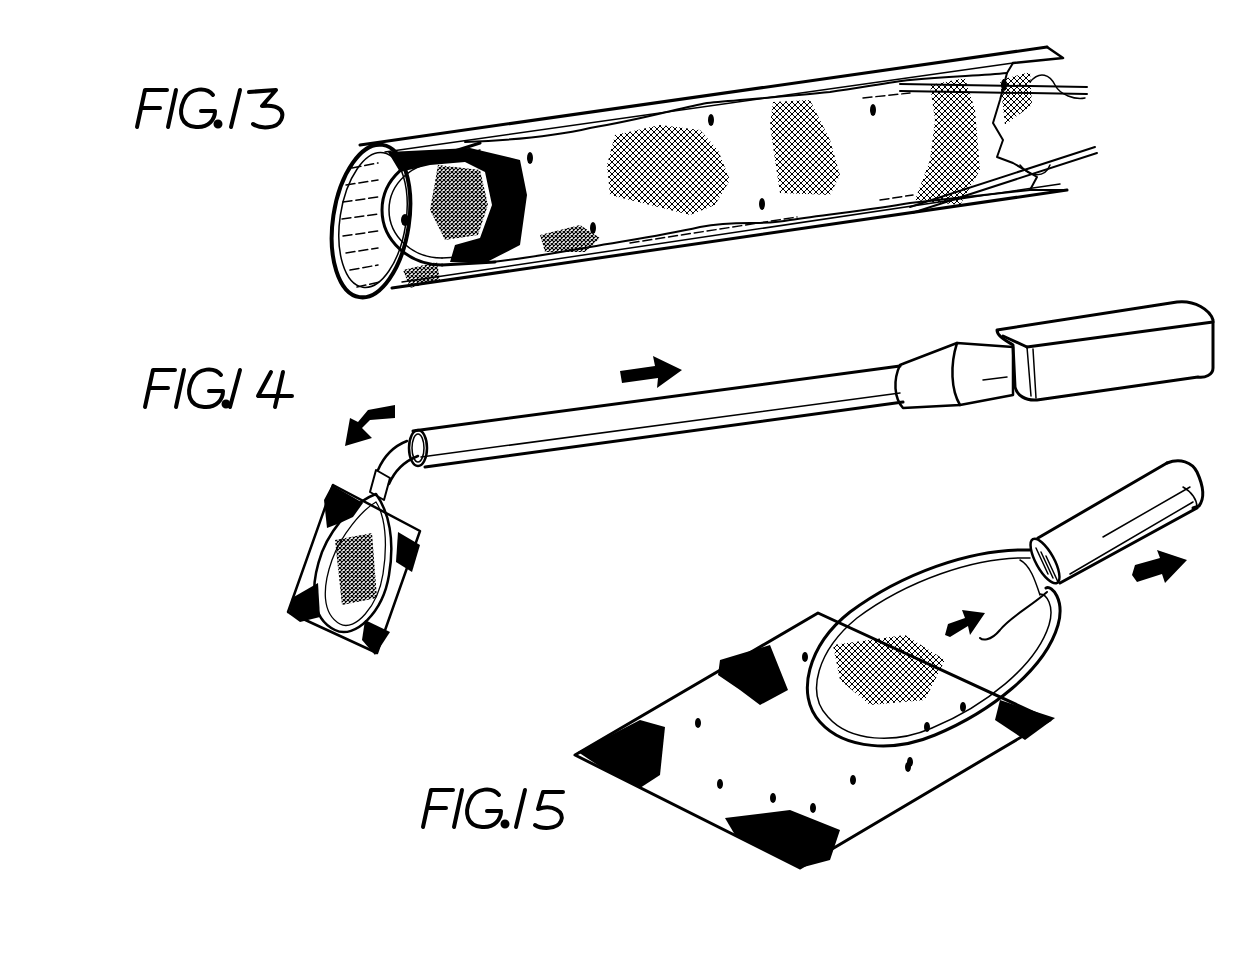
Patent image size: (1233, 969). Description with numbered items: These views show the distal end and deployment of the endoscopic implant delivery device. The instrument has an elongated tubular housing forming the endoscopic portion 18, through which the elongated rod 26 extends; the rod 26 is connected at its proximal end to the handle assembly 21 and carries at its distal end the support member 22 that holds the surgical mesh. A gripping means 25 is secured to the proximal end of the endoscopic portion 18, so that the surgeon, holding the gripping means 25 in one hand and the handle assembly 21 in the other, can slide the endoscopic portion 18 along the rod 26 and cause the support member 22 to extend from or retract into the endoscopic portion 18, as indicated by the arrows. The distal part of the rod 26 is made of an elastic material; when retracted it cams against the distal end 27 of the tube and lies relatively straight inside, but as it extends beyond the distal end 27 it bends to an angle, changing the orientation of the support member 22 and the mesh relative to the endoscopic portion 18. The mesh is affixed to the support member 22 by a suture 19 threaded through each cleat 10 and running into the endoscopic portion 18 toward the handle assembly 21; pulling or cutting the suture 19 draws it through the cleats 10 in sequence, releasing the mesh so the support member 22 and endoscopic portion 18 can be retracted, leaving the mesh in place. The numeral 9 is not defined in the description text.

In FIG. 13, the sample sheet 9 is at (690, 238).
In FIG. 14, the sample sheet 9 is at (307, 572).
In FIG. 15, the sample sheet 9 is at (633, 722).
In FIG. 13, the cleat 10 is at (432, 270).
In FIG. 15, the cleat 10 is at (694, 712).
In FIG. 13, the endoscopic portion 18 is at (412, 148).
In FIG. 14, the endoscopic portion 18 is at (720, 410).
In FIG. 15, the endoscopic portion 18 is at (1112, 510).
In FIG. 13, the suture 19 is at (1088, 135).
In FIG. 15, the suture 19 is at (1003, 630).
In FIG. 14, the handle assembly 21 is at (1133, 318).
In FIG. 13, the support member 22 is at (347, 222).
In FIG. 14, the support member 22 is at (335, 628).
In FIG. 15, the support member 22 is at (883, 592).
In FIG. 14, the gripping means 25 is at (967, 350).
In FIG. 14, the elongated rod 26 is at (418, 440).
In FIG. 13, the distal end of the tube 27 is at (355, 274).
In FIG. 14, the distal end of the tube 27 is at (412, 465).
In FIG. 15, the distal end of the tube 27 is at (1022, 555).